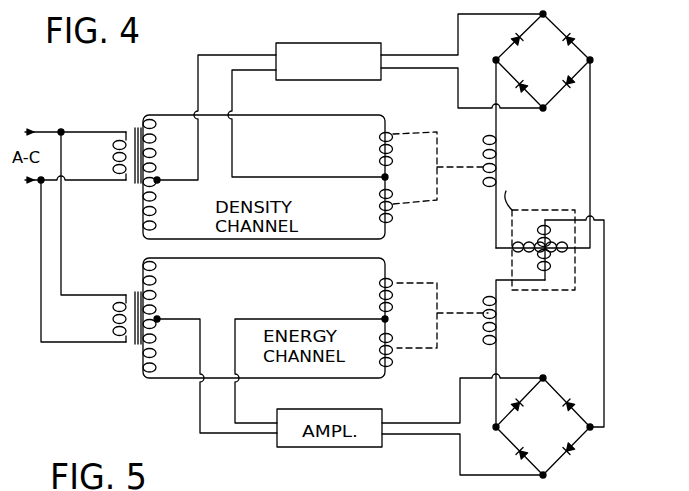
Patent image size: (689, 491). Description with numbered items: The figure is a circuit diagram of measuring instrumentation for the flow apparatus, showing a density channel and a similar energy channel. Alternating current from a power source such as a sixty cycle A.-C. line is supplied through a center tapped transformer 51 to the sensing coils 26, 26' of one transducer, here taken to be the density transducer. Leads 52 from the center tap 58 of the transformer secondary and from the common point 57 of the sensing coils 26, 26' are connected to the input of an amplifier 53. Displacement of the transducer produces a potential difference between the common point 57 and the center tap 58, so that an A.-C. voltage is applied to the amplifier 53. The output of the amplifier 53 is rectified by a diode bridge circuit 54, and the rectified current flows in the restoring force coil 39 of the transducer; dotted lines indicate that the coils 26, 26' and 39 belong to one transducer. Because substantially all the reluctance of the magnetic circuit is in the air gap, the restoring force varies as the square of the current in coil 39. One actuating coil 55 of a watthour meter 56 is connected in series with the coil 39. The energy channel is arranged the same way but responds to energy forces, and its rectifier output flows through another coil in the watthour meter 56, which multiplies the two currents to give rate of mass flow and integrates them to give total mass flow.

The center tapped transformer 51 is at (131, 126).
The center tap 58 is at (158, 182).
The leads 52 is at (199, 125).
The amplifier 53 is at (332, 43).
The sensing coil 26 is at (365, 148).
The sensing coil 26' is at (365, 206).
The common point 57 is at (387, 177).
The restoring force coil 39 is at (500, 157).
The diode bridge circuit 54 is at (565, 56).
The actuating coil 55 is at (557, 248).
The watthour meter 56 is at (560, 290).